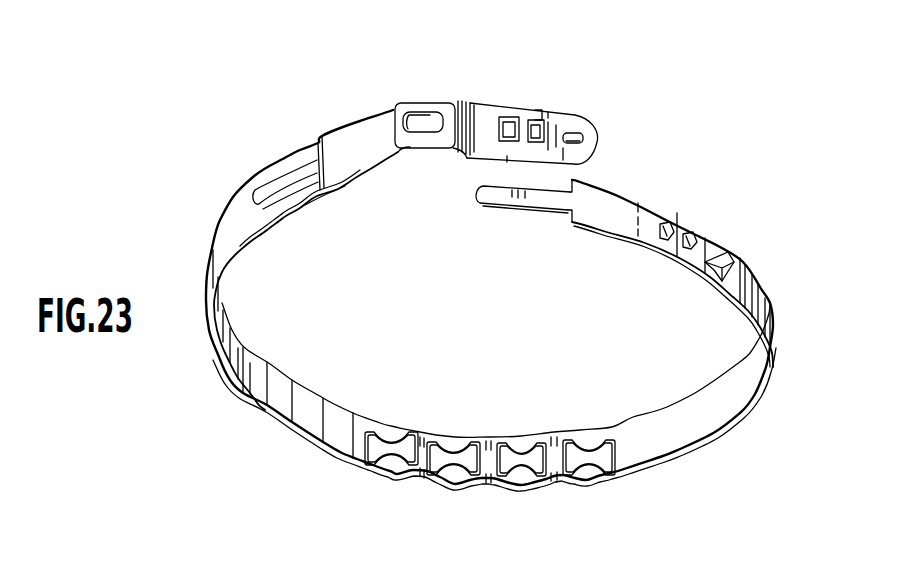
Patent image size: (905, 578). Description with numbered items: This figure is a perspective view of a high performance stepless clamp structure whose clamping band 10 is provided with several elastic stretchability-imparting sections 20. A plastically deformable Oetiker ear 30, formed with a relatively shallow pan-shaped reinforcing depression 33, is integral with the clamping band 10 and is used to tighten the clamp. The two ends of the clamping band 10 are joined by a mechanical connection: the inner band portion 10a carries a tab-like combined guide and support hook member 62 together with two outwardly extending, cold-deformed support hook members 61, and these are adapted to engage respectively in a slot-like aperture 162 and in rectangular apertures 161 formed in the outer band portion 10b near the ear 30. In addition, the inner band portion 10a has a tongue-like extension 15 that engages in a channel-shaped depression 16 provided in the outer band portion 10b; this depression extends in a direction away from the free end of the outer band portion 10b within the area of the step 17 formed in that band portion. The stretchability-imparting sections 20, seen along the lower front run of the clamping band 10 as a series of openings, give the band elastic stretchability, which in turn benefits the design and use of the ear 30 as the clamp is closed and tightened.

The clamping band 10 is at (234, 407).
The inner band portion 10a is at (617, 220).
The outer band portion 10b is at (373, 172).
The tongue-like extension 15 is at (510, 197).
The channel-shaped depression 16 is at (278, 178).
The step 17 is at (327, 190).
The elastic stretchability-imparting sections 20 is at (449, 491).
The ear 30 is at (446, 96).
The pan-shaped reinforcing depression 33 is at (416, 115).
The support hook members 61 is at (690, 232).
The combined guide and support hook member 62 is at (734, 263).
The rectangular apertures 161 is at (541, 118).
The slot-like aperture 162 is at (579, 134).